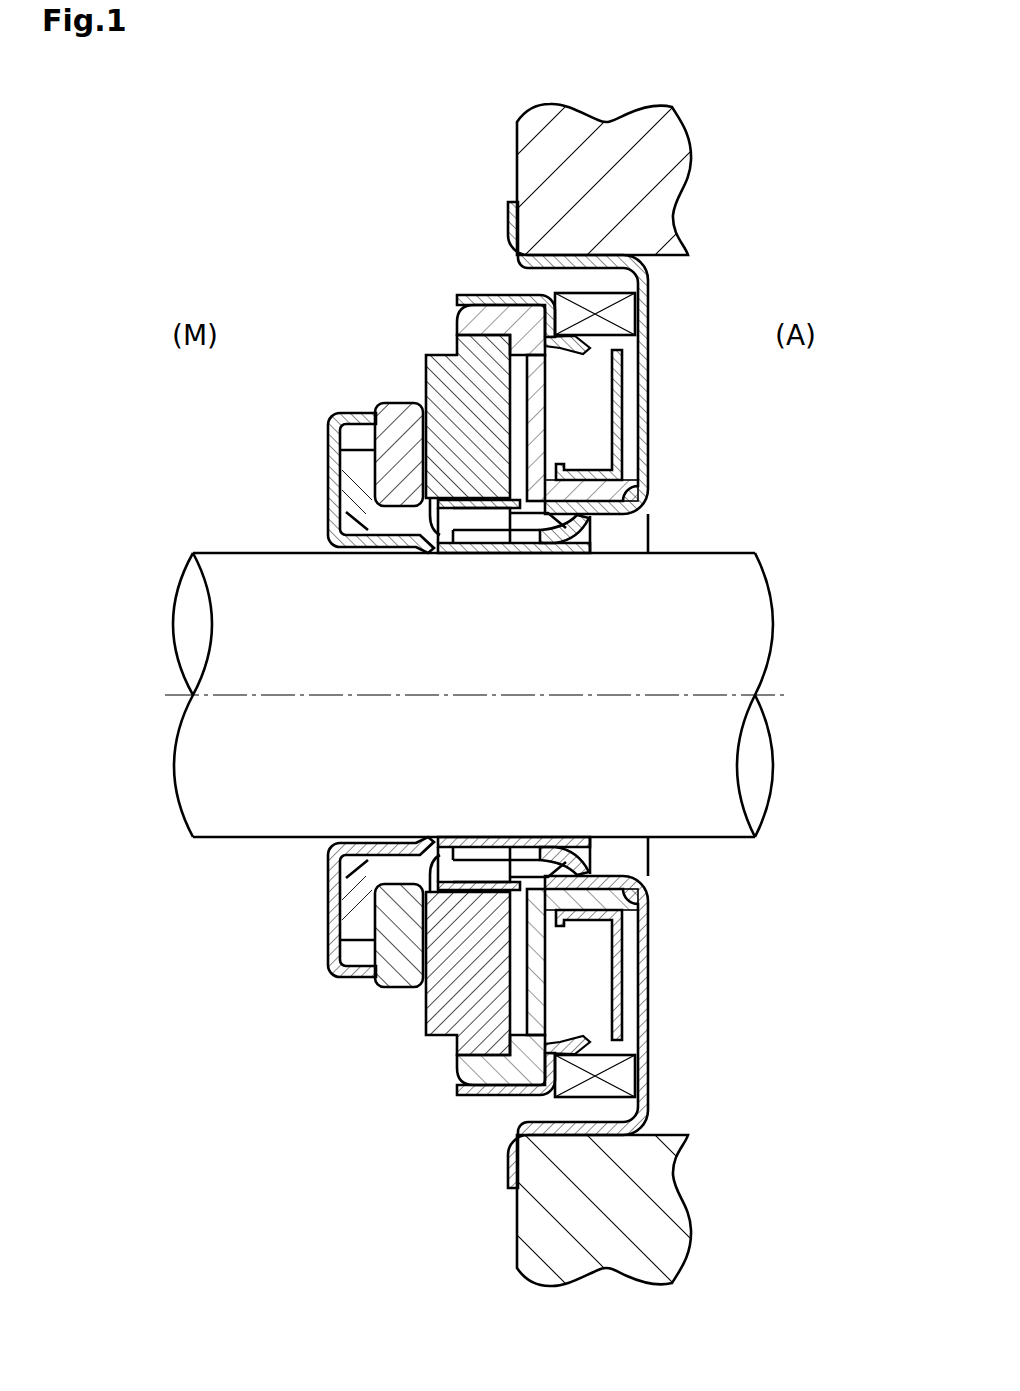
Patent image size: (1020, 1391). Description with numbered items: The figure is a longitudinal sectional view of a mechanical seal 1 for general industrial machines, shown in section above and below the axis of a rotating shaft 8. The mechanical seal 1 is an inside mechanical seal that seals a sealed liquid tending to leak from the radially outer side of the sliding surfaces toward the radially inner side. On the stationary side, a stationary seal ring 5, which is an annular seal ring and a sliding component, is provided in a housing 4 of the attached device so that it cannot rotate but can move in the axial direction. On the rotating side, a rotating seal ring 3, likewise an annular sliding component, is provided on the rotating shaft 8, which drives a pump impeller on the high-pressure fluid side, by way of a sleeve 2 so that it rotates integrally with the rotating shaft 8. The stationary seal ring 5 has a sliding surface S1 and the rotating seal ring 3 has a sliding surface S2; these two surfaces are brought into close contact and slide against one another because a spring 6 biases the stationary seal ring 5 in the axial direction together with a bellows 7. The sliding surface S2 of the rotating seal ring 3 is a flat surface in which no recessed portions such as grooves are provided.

The mechanical seal 1 is at (490, 695).
The sleeve 2 is at (331, 478).
The rotating seal ring 3 is at (386, 412).
The housing 4 is at (541, 180).
The stationary seal ring 5 is at (468, 306).
The spring 6 is at (632, 320).
The bellows 7 is at (505, 332).
The rotating shaft 8 is at (705, 562).
The sliding surface S1 is at (409, 455).
The sliding surface S2 is at (441, 505).